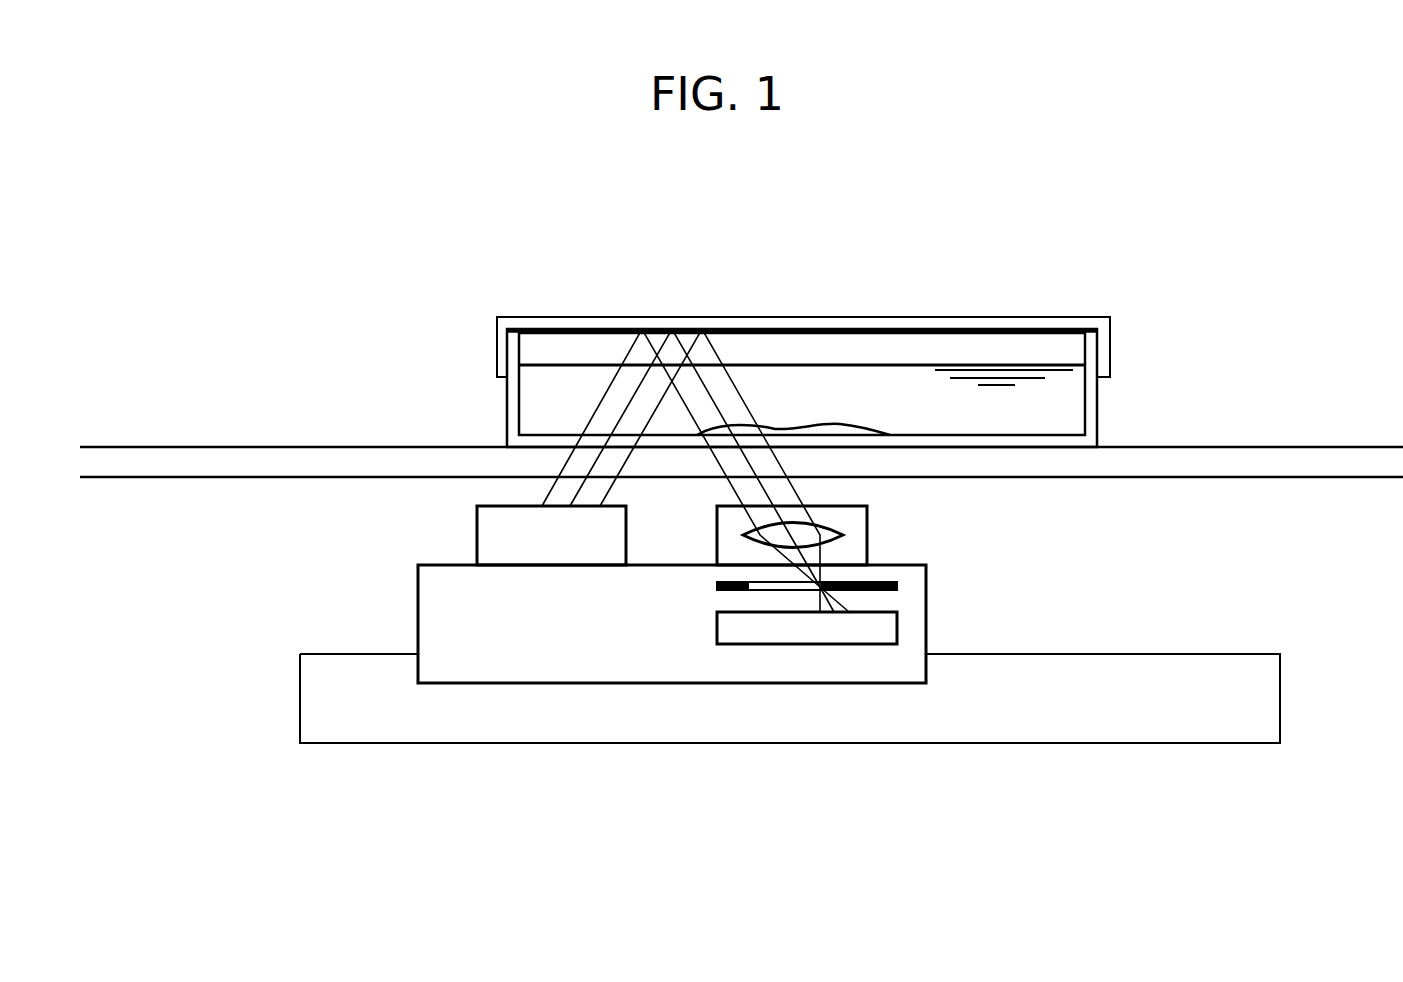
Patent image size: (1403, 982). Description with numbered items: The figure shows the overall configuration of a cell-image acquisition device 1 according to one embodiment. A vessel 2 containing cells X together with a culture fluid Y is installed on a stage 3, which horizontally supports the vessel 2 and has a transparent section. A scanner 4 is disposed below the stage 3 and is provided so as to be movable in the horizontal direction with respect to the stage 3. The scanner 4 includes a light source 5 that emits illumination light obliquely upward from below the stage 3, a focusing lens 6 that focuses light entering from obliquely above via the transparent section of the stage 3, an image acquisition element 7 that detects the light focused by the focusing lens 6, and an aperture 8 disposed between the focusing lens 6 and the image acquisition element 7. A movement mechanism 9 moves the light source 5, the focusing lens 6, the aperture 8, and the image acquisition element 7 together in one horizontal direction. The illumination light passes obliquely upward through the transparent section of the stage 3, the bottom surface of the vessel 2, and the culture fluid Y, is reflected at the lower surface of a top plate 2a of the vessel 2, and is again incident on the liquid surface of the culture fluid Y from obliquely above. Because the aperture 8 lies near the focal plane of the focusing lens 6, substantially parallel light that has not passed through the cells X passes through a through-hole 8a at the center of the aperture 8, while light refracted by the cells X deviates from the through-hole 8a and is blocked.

The cell-image acquisition device 1 is at (328, 175).
The vessel 2 is at (564, 308).
The top plate 2a is at (790, 317).
The stage 3 is at (347, 447).
The scanner 4 is at (305, 566).
The light source 5 is at (477, 535).
The focusing lens 6 is at (843, 532).
The image acquisition element 7 is at (897, 625).
The aperture 8 is at (717, 587).
The through-hole 8a is at (852, 584).
The movement mechanism 9 is at (1153, 640).
The cells X is at (840, 423).
The culture fluid Y is at (985, 365).